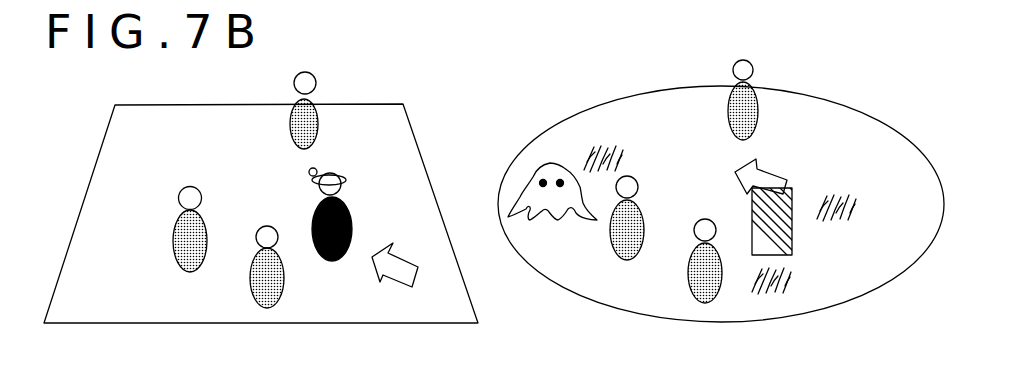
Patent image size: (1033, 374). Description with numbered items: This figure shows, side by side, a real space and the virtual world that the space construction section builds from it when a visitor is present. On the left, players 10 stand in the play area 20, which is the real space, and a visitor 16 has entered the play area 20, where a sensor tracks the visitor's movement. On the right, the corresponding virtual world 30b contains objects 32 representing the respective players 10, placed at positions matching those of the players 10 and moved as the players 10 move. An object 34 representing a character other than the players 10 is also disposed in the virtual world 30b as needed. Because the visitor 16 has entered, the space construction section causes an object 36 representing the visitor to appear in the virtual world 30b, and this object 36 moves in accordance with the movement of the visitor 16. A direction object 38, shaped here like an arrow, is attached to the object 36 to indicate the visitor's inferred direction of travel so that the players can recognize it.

The players 10 is at (267, 225).
The play area 20 is at (261, 188).
The visitor 16 is at (350, 210).
The virtual world 30b is at (721, 183).
The objects representing the players 32 is at (705, 219).
The object representing a character 34 is at (551, 164).
The direction object 38 is at (787, 178).
The object representing the visitor 36 is at (792, 255).